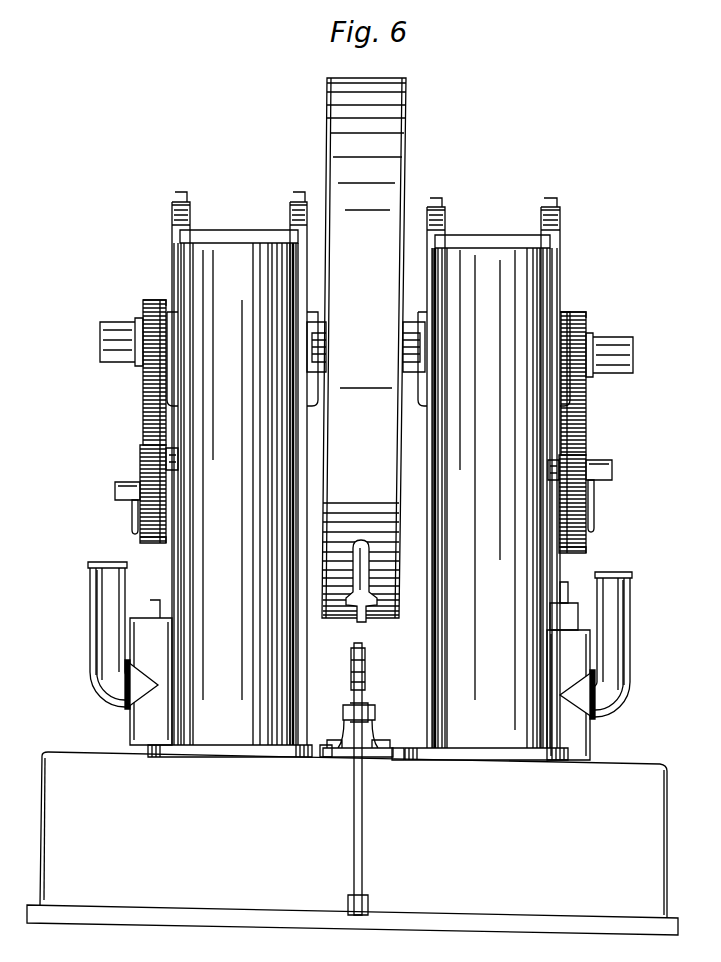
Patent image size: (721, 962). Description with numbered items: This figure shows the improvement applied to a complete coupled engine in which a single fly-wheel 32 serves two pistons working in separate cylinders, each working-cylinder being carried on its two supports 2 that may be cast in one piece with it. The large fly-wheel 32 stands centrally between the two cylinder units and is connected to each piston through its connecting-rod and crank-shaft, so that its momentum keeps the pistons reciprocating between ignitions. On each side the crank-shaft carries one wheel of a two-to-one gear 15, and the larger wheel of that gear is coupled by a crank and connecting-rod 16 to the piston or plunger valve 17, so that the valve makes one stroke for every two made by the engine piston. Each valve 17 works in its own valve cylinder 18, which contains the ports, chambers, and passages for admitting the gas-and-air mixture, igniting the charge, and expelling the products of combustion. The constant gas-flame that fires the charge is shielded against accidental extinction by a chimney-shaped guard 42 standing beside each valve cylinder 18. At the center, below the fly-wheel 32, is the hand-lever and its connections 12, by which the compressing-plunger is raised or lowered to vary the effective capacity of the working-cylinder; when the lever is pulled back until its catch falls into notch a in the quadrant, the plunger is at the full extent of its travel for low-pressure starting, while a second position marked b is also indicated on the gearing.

The supports 2 is at (368, 470).
The hand-lever and its connections 12 is at (358, 727).
The two-to-one gear 15 is at (366, 426).
The crank and connecting-rod 16 is at (364, 531).
The piston or plunger valve 17 is at (564, 616).
The valve cylinder 18 is at (360, 680).
The fly-wheel 32 is at (366, 348).
The chimney-shaped guard 42 is at (360, 639).
The notch in the quadrant a is at (364, 299).
The lower gear b is at (363, 551).